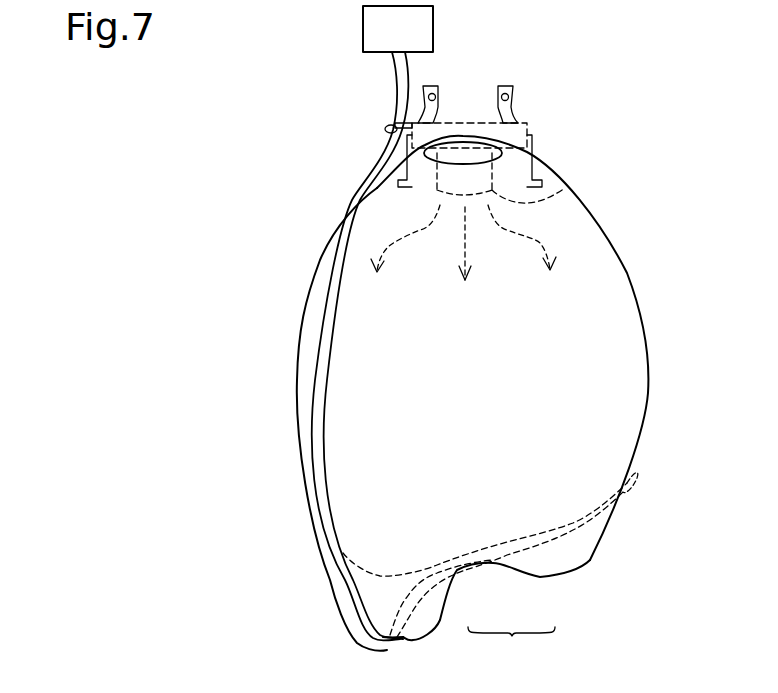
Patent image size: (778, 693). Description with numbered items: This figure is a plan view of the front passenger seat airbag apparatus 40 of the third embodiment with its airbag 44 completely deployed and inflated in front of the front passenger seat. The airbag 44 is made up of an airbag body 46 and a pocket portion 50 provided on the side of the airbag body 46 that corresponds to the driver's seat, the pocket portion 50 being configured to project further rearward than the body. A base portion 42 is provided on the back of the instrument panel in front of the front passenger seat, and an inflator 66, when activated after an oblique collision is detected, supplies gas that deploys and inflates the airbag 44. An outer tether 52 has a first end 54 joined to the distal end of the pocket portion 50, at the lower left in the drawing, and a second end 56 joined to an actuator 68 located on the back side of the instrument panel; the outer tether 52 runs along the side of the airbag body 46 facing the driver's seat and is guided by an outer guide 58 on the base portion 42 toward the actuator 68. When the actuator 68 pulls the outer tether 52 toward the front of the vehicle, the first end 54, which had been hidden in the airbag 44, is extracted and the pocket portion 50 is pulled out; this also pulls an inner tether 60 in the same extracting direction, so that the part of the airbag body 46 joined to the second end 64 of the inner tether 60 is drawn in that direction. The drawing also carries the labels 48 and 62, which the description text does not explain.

The front passenger seat airbag apparatus 40 is at (226, 565).
The base portion 42 is at (520, 125).
The airbag 44 is at (511, 648).
The airbag body 46 is at (533, 515).
The inflator 48 is at (465, 150).
The pocket portion 50 is at (437, 617).
The outer tether 52 is at (297, 472).
The first end 54 is at (387, 650).
The second end 56 is at (392, 58).
The outer guide 58 is at (387, 128).
The inner tether 60 is at (490, 543).
The tether seam 62 is at (395, 633).
The second end 64 is at (640, 470).
The inflator 66 is at (567, 187).
The actuator 68 is at (433, 25).